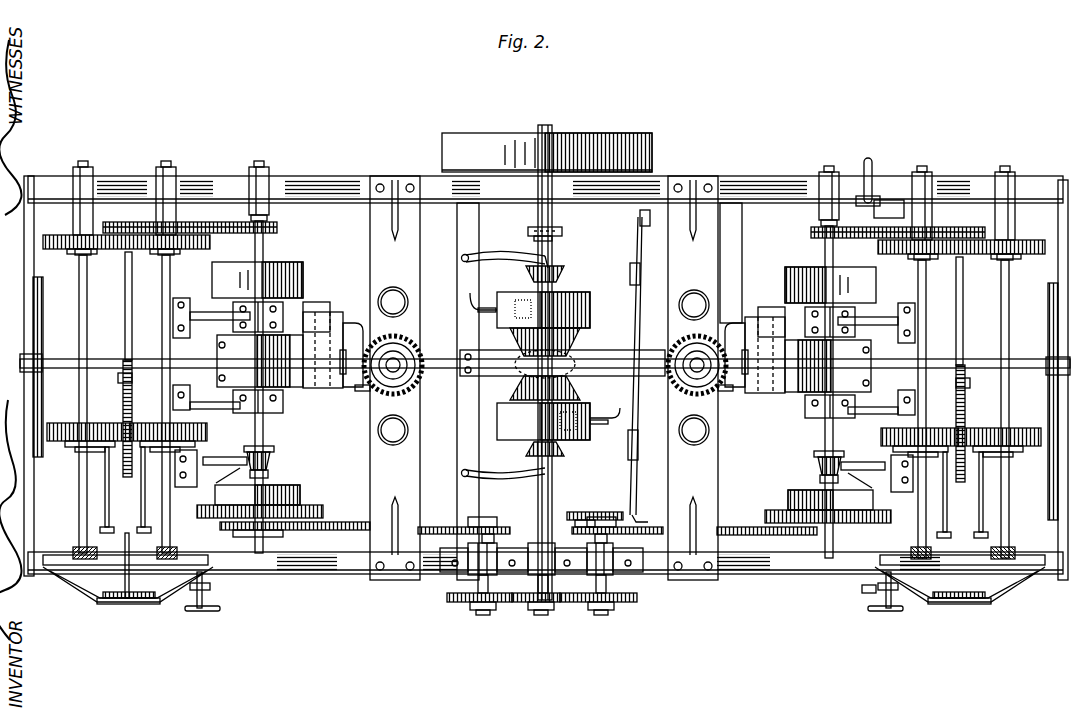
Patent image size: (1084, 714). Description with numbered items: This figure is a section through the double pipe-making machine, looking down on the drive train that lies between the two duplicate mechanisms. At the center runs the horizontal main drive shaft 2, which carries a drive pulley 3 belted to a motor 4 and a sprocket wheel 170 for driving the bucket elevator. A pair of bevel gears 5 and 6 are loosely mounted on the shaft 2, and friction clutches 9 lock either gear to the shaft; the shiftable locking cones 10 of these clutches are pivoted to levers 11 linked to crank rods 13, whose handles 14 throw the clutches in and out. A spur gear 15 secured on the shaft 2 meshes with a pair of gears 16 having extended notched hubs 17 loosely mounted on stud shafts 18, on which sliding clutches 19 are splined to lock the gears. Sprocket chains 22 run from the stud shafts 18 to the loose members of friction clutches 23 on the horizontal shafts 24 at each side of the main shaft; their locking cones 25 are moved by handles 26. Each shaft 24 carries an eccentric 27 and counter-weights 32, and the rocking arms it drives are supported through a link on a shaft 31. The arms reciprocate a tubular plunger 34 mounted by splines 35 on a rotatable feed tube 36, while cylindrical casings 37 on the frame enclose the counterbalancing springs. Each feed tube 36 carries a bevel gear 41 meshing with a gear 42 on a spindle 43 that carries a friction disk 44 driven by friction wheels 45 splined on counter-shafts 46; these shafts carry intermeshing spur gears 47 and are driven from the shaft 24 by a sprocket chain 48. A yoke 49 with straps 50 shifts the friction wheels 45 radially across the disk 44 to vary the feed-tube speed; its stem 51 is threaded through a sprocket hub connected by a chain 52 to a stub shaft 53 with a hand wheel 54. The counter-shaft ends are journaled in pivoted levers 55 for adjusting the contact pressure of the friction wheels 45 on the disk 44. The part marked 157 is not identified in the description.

The main drive shaft 2 is at (545, 128).
The drive pulley 3 is at (575, 135).
The motor 4 is at (125, 390).
The bevel gear 5 is at (572, 336).
The bevel gear 6 is at (574, 394).
The friction clutch 9 is at (592, 278).
The shiftable locking cone 10 is at (560, 272).
The lever 11 is at (500, 256).
The crank rod 13 is at (760, 200).
The handle 14 is at (875, 172).
The spur gear 15 is at (541, 615).
The gear 16 is at (450, 600).
The notched hub 17 is at (632, 430).
The stud shaft 18 is at (468, 582).
The sliding clutch 19 is at (482, 615).
The sprocket chain 22 is at (448, 526).
The friction clutch 23 is at (305, 506).
The horizontal shaft 24 is at (266, 438).
The shiftable locking cone 25 is at (272, 464).
The handle 26 is at (232, 458).
The eccentric 27 is at (300, 302).
The shaft 31 is at (322, 304).
The counter-weight 32 is at (300, 263).
The tubular plunger 34 is at (412, 392).
The spline 35 is at (668, 330).
The feed tube 36 is at (421, 368).
The cylindrical casing 37 is at (393, 446).
The bevel gear 41 is at (372, 390).
The bevel gear 42 is at (355, 318).
The spindle 43 is at (150, 358).
The friction disk 44 is at (960, 392).
The friction wheel 45 is at (1000, 432).
The counter-shaft 46 is at (160, 316).
The spur gear 47 is at (118, 250).
The sprocket chain 48 is at (231, 222).
The yoke 49 is at (982, 518).
The strap 50 is at (895, 446).
The stem 51 is at (98, 606).
The sprocket chain 52 is at (142, 606).
The stub shaft 53 is at (212, 604).
The hand wheel 54 is at (212, 614).
The lever 55 is at (160, 552).
The rack 157 is at (595, 511).
The sprocket wheel 170 is at (562, 232).